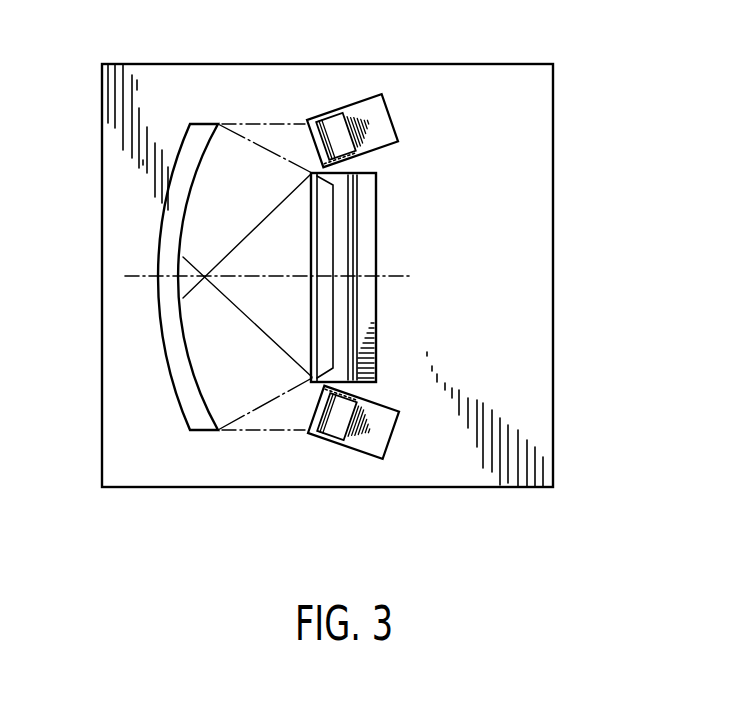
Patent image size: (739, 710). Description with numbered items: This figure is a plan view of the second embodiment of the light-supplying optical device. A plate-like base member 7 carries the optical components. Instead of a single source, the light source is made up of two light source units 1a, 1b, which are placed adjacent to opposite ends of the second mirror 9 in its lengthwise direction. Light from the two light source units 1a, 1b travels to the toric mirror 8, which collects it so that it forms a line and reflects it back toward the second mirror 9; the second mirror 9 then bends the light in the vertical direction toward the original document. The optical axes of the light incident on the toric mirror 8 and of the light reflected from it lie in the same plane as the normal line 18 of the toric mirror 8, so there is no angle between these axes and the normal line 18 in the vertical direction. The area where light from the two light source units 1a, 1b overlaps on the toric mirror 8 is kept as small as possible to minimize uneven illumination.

The light source unit 1a is at (388, 123).
The light source unit 1b is at (387, 441).
The base member 7 is at (537, 435).
The toric mirror 8 is at (170, 352).
The second mirror 9 is at (340, 215).
The normal line 18 is at (137, 275).